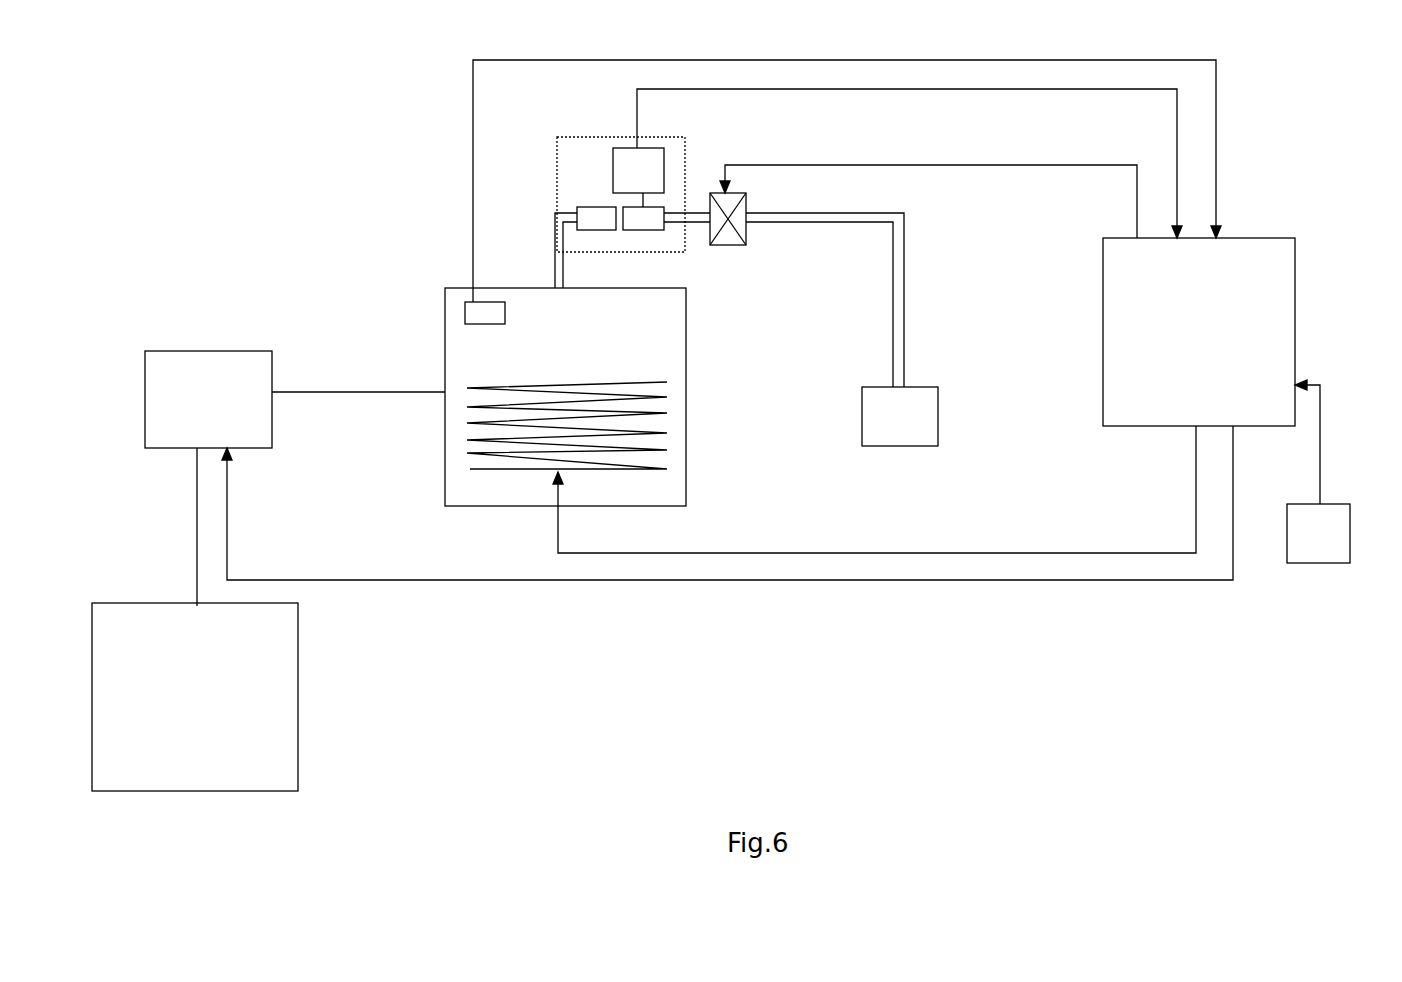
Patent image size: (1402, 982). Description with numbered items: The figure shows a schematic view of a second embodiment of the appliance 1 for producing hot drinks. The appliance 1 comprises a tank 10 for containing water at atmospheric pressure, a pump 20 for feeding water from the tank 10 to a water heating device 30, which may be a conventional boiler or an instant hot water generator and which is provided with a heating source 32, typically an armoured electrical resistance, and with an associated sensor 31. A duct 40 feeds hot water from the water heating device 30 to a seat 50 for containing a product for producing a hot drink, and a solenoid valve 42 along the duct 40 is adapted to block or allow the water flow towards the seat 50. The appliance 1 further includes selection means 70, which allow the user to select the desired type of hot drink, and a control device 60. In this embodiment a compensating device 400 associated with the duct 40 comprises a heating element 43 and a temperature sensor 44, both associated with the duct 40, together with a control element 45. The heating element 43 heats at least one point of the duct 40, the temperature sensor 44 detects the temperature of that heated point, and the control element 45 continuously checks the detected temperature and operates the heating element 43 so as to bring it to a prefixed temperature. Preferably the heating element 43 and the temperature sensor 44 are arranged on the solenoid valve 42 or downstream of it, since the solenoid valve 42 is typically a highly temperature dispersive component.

The appliance 1 is at (1112, 776).
The tank 10 is at (254, 697).
The pump 20 is at (219, 367).
The water heating device 30 is at (623, 397).
The sensor 31 is at (439, 290).
The heating source 32 is at (619, 460).
The duct 40 is at (878, 300).
The solenoid valve 42 is at (765, 250).
The heating element 43 is at (554, 209).
The temperature sensor 44 is at (633, 217).
The control element 45 is at (608, 144).
The seat 50 is at (938, 449).
The control device 60 is at (1232, 304).
The selection means 70 is at (1341, 561).
The compensating device 400 is at (673, 147).